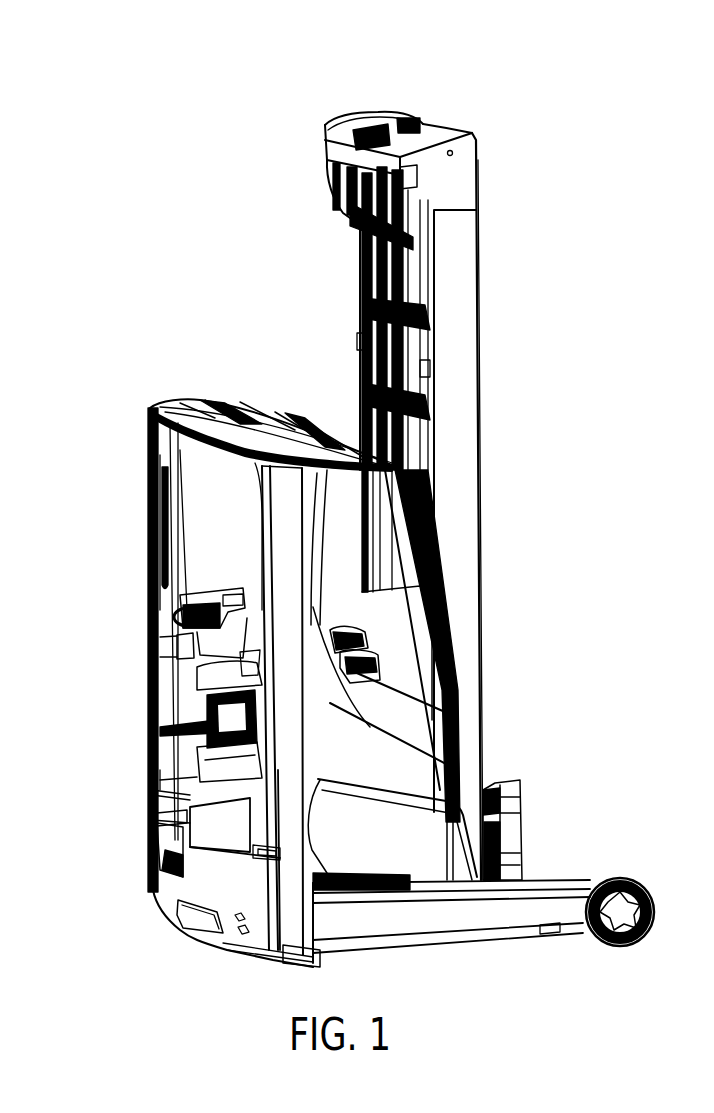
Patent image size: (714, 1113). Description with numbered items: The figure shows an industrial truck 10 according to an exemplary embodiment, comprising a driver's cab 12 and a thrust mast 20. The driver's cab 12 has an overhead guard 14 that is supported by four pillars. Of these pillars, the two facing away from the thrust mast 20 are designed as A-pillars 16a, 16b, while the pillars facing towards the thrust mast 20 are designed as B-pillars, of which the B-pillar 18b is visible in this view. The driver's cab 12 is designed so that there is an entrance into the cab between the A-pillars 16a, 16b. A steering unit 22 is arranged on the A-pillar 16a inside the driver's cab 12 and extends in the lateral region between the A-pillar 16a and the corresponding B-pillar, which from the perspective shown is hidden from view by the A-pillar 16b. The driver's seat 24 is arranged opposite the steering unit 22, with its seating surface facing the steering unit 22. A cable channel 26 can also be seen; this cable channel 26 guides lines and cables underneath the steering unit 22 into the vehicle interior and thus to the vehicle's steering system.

The industrial truck 10 is at (540, 98).
The driver's cab 12 is at (120, 682).
The overhead guard 14 is at (206, 404).
The A-pillar 16a is at (148, 611).
The A-pillar 16b is at (285, 578).
The B-pillar 18b is at (443, 589).
The thrust mast 20 is at (360, 306).
The steering unit 22 is at (215, 582).
The driver's seat 24 is at (335, 640).
The cable channel 26 is at (150, 646).